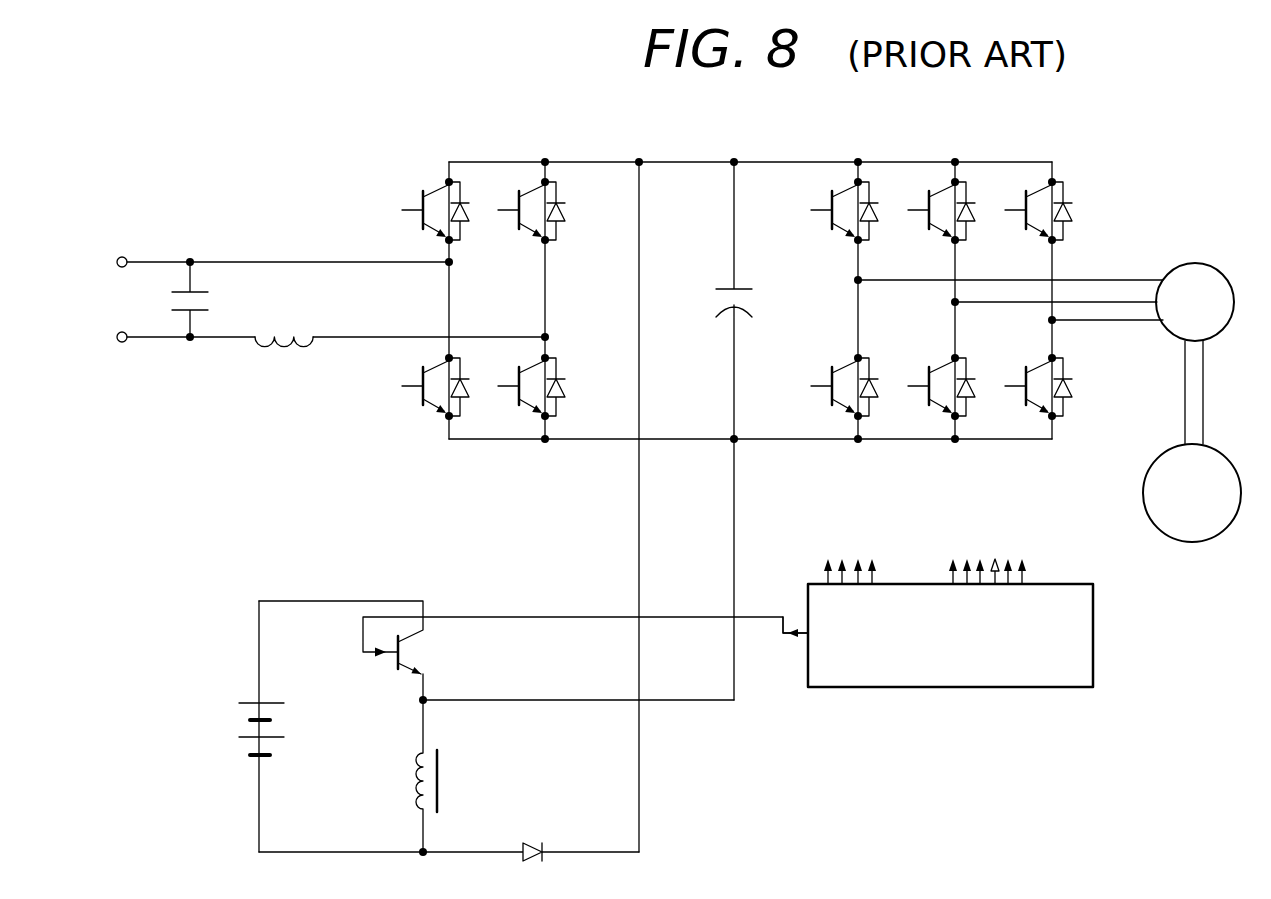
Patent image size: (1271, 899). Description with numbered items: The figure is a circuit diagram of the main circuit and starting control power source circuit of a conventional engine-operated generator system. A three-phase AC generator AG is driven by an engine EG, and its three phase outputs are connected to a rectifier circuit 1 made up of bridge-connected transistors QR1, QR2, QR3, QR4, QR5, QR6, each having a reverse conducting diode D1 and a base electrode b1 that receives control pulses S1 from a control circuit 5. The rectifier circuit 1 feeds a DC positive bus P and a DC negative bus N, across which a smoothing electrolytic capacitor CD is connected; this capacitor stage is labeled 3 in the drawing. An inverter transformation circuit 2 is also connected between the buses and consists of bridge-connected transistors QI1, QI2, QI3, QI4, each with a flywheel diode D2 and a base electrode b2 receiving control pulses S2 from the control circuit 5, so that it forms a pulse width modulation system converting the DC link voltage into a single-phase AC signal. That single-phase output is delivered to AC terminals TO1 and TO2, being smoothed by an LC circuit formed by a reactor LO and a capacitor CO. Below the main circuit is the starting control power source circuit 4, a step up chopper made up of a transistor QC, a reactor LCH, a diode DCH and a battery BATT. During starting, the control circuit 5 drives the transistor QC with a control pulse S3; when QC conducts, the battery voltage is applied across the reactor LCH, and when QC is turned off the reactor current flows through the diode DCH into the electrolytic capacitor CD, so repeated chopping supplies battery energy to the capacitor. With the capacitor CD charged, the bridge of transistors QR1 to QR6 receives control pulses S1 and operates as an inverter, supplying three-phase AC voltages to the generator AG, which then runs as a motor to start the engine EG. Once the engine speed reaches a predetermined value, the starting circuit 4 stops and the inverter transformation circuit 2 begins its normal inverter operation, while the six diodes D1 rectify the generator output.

The rectifier circuit 1 is at (979, 302).
The inverter transformation circuit 2 is at (505, 302).
The DC link capacitor CD 3 is at (746, 431).
The starting control power source circuit 4 is at (489, 713).
The control circuit 5 is at (936, 633).
The DC positive bus P is at (770, 162).
The DC negative bus N is at (773, 439).
The AC terminal TO1 is at (256, 263).
The AC terminal TO2 is at (304, 338).
The capacitor CO is at (211, 299).
The reactor LO is at (284, 323).
The smoothing electrolytic capacitor CD is at (723, 431).
The transistor QI1 is at (435, 186).
The transistor QI2 is at (436, 415).
The transistor QI3 is at (532, 186).
The transistor QI4 is at (532, 415).
The transistor QR1 is at (848, 186).
The transistor QR2 is at (847, 415).
The transistor QR3 is at (945, 186).
The transistor QR4 is at (944, 415).
The transistor QR5 is at (1041, 186).
The transistor QR6 is at (1041, 415).
The base electrode b1 is at (908, 288).
The base electrode b2 is at (450, 288).
The reverse conducting diode D1 is at (880, 210).
The flywheel diode D2 is at (471, 210).
The three-phase AC generator AG is at (1195, 302).
The engine EG is at (1192, 441).
The transistor QC is at (533, 635).
The battery BATT is at (227, 726).
The reactor LCH is at (455, 778).
The diode DCH is at (449, 834).
The control pulses S1 is at (1027, 558).
The control pulses S2 is at (877, 558).
The control pulse S3 is at (791, 643).